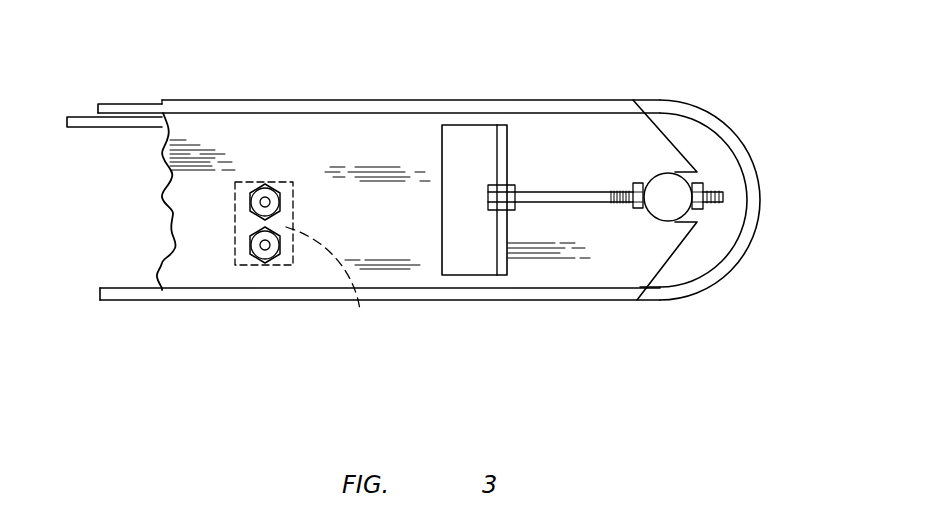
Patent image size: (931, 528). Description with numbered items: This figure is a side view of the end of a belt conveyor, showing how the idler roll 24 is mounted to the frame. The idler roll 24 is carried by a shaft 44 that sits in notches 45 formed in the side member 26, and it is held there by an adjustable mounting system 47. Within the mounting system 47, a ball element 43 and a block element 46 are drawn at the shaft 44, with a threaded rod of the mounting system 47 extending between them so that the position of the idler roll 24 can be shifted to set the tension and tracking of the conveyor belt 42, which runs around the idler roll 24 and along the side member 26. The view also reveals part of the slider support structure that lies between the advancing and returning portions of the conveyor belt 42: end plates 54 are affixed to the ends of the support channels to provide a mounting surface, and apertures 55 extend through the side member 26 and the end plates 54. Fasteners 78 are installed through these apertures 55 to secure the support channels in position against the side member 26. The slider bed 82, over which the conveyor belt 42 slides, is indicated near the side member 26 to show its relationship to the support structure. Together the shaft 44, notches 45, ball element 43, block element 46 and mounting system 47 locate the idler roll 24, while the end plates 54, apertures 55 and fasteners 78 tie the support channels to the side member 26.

The idler roll 24 is at (687, 265).
The side member 26 is at (222, 134).
The conveyor belt 42 is at (128, 104).
The ball 43 is at (692, 182).
The shaft 44 is at (665, 180).
The notch 45 is at (695, 215).
The block 46 is at (443, 138).
The adjustable mounting system 47 is at (583, 192).
The end plate 54 is at (360, 310).
The aperture 55 is at (278, 184).
The fastener 78 is at (257, 216).
The slider bed 82 is at (117, 127).